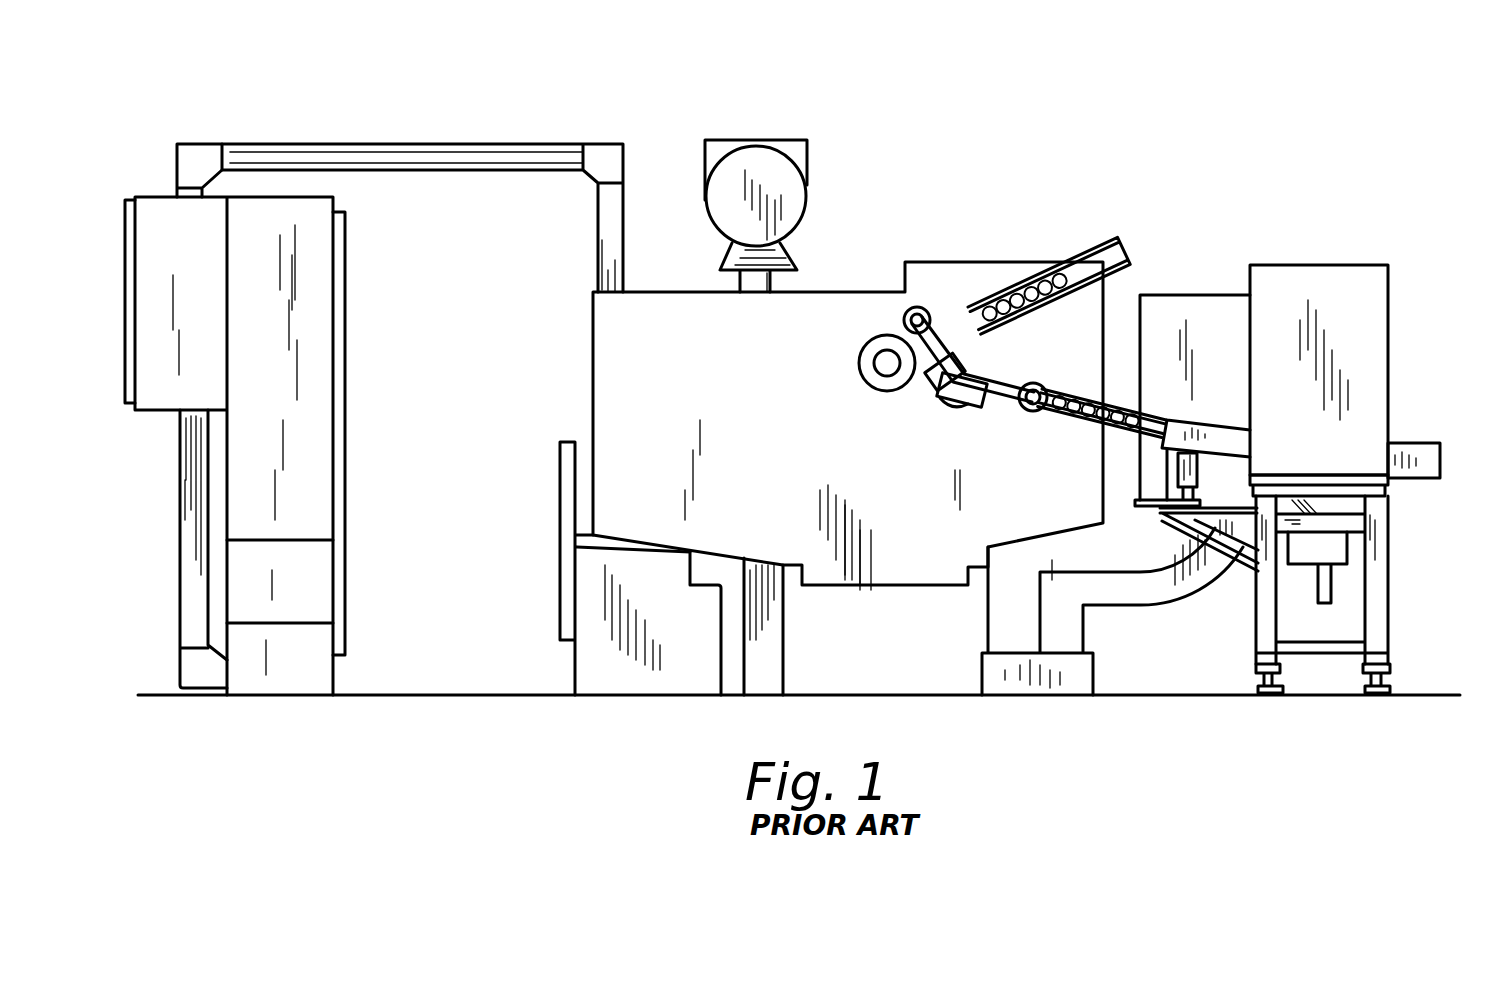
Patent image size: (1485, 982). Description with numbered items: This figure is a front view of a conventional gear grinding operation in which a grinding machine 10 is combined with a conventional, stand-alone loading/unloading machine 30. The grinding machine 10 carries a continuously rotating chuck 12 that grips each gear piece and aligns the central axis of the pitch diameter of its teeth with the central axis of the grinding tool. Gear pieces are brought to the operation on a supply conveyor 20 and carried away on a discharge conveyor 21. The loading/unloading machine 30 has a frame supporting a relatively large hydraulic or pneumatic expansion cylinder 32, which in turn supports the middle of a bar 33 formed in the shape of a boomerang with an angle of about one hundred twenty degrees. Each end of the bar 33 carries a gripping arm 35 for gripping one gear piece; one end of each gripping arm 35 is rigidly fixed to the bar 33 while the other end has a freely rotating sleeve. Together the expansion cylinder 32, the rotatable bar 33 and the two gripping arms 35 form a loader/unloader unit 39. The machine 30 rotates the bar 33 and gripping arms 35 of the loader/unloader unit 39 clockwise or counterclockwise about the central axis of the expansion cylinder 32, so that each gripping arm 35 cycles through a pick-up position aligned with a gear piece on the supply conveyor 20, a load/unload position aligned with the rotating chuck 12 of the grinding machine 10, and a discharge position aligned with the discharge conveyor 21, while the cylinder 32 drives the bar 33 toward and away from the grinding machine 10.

The grinding machine 10 is at (727, 80).
The chuck 12 is at (867, 373).
The supply conveyor 20 is at (1112, 236).
The discharge conveyor 21 is at (1096, 424).
The loading/unloading machine 30 is at (742, 374).
The expansion cylinder 32 is at (932, 397).
The bar 33 is at (1008, 390).
The gripping arm 35 is at (923, 308).
The loader/unloader unit 39 is at (953, 407).